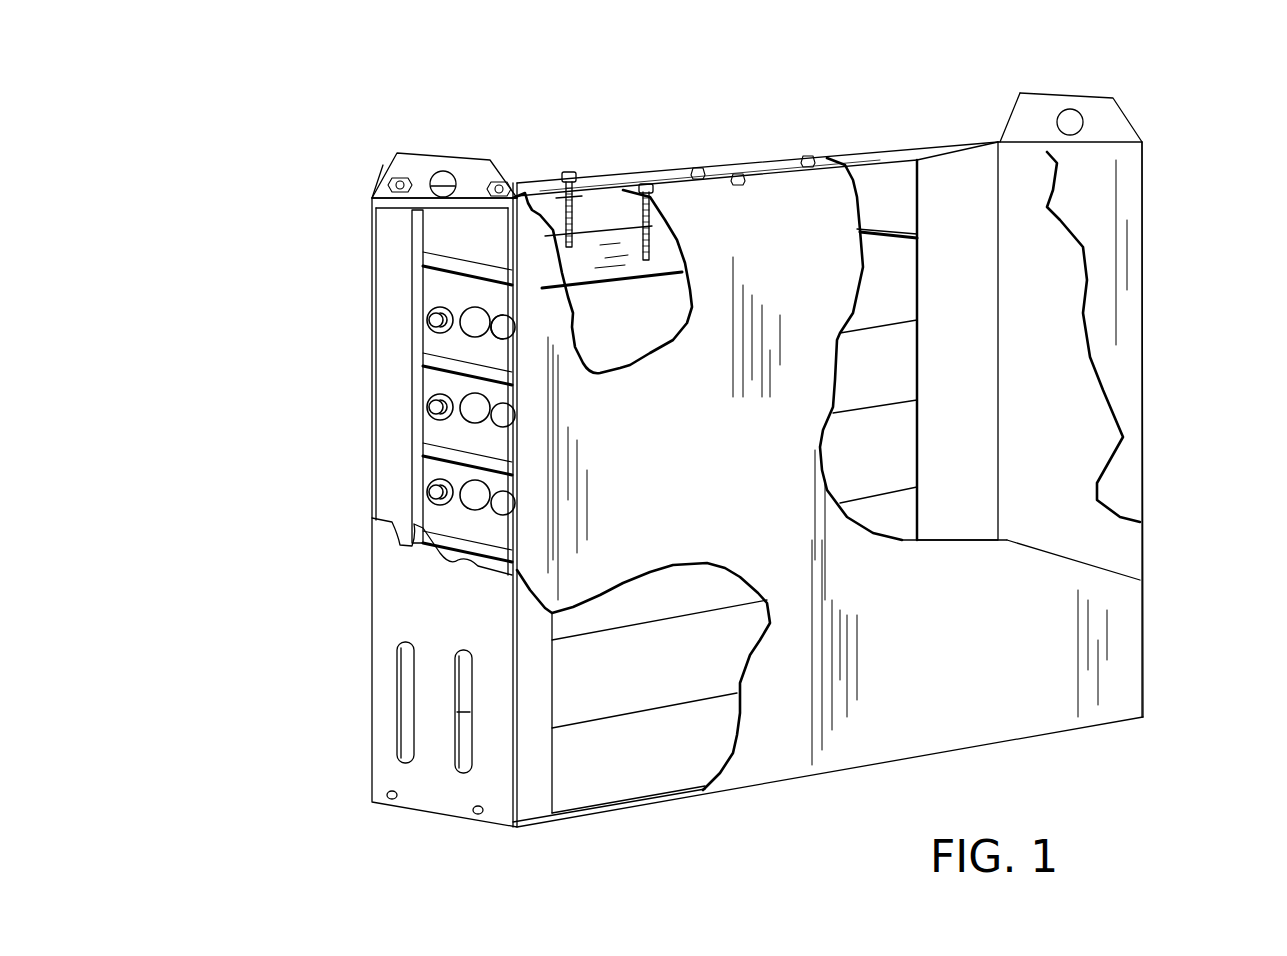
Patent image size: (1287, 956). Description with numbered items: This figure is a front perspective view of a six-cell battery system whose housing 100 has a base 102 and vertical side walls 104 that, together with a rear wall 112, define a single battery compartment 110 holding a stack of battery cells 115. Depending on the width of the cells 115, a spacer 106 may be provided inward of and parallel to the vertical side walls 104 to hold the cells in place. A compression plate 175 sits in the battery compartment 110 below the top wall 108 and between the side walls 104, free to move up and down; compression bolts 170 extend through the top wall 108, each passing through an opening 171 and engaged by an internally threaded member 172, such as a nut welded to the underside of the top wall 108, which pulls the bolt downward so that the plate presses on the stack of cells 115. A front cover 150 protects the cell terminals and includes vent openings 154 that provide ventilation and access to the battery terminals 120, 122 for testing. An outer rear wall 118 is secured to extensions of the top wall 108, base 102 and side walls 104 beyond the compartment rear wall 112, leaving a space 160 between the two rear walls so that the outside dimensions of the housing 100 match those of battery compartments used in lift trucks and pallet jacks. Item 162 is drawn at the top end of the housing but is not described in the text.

The housing 100 is at (700, 75).
The base 102 is at (742, 792).
The vertical side walls 104 is at (373, 275).
The spacer 106 is at (412, 218).
The top wall 108 is at (790, 157).
The battery compartment 110 is at (465, 228).
The rear wall 112 is at (913, 148).
The battery cells 115 is at (651, 320).
The outer rear wall 118 is at (1105, 562).
The battery terminals 120 is at (430, 322).
The battery terminals 122 is at (430, 408).
The front cover 150 is at (390, 762).
The vent openings 154 is at (398, 692).
The space 160 is at (1058, 480).
The top end 162 is at (383, 165).
The compression bolts 170 is at (568, 172).
The opening 171 is at (445, 153).
The internally threaded member 172 is at (560, 196).
The compression plate 175 is at (508, 327).